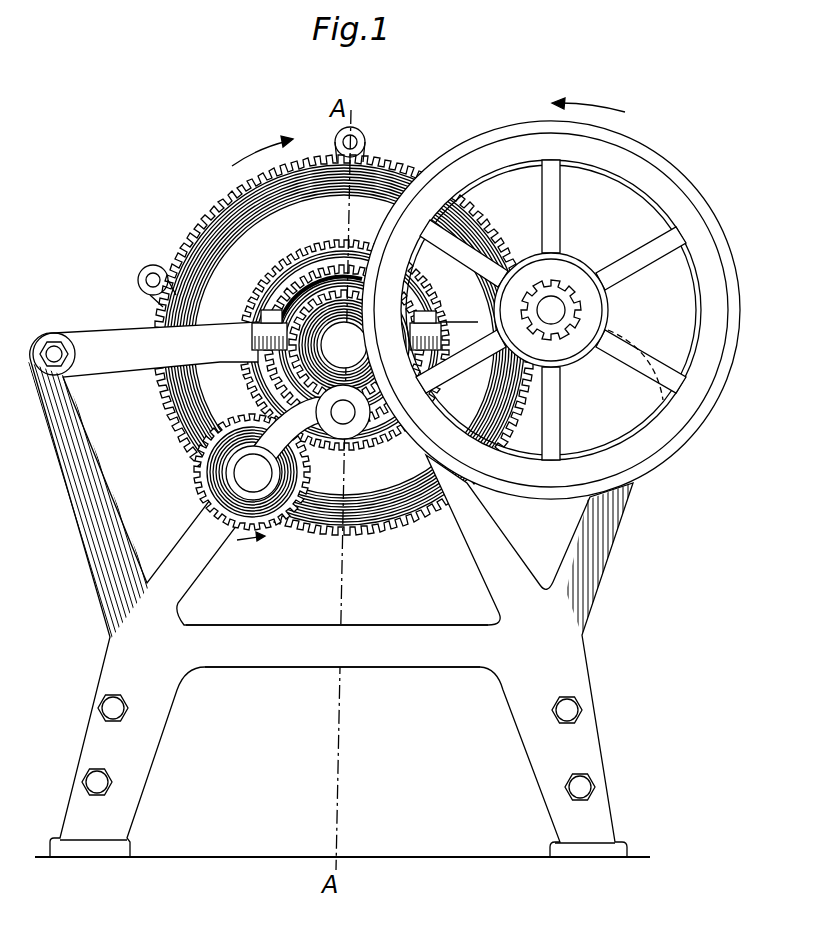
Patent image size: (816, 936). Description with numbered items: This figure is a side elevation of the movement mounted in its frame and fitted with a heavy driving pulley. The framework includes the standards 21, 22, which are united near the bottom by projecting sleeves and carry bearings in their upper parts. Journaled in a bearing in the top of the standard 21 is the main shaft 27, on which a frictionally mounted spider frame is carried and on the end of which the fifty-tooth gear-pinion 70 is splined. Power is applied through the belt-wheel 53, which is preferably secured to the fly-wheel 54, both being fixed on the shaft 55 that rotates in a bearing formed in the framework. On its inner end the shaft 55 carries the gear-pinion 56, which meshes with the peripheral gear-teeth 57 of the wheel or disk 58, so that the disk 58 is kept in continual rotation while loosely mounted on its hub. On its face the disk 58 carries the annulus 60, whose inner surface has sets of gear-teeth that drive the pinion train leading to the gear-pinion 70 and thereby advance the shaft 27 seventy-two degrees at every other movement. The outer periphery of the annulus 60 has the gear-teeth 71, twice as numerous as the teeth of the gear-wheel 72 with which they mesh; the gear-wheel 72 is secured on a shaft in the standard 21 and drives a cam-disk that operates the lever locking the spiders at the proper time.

The standard 21 is at (73, 538).
The standard 22 is at (337, 646).
The shaft 27 is at (344, 345).
The belt-wheel 53 is at (608, 310).
The fly-wheel 54 is at (713, 234).
The shaft 55 is at (557, 302).
The gear-pinion 56 is at (600, 326).
The peripheral gear-teeth 57 is at (212, 206).
The wheel or disk 58 is at (344, 345).
The annulus 60 is at (284, 276).
The gear-teeth 71 is at (256, 300).
The gear-wheel 72 is at (202, 482).
The gear-pinion 70 is at (298, 372).